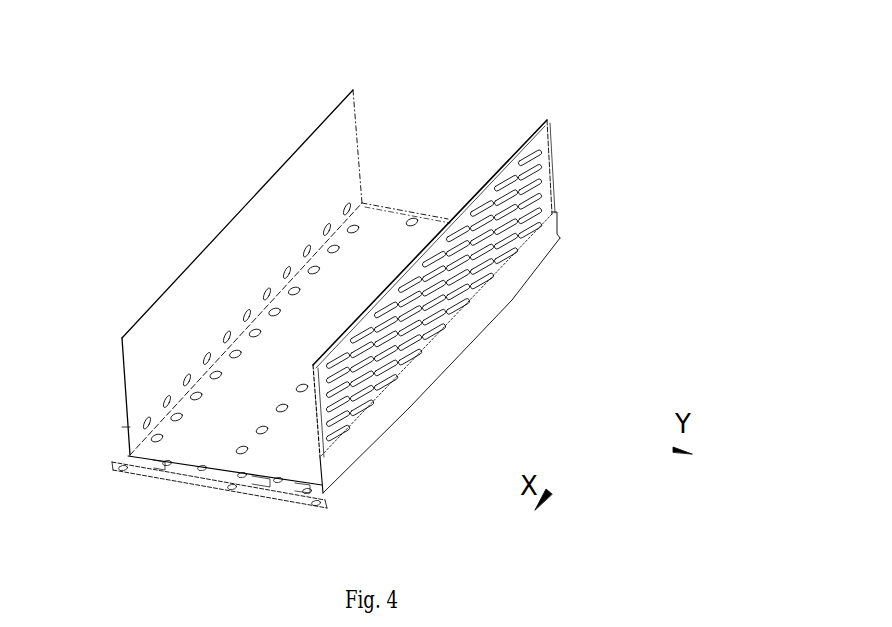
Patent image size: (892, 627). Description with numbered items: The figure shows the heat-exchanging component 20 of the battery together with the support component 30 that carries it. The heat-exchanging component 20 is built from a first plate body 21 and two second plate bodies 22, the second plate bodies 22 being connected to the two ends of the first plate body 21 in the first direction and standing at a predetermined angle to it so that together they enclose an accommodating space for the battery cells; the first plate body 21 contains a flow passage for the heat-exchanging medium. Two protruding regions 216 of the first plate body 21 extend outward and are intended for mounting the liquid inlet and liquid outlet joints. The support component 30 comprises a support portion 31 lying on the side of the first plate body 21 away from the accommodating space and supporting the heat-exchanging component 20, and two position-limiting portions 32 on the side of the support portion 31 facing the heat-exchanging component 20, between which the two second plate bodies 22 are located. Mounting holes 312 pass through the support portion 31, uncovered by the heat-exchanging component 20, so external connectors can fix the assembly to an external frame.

The heat-exchanging component 20 is at (495, 73).
The first plate body 21 is at (392, 227).
The second plate body 22 is at (348, 138).
The protruding region 216 is at (172, 482).
The support component 30 is at (411, 500).
The support portion 31 is at (323, 497).
The position-limiting portion 32 is at (373, 430).
The mounting hole 312 is at (115, 467).